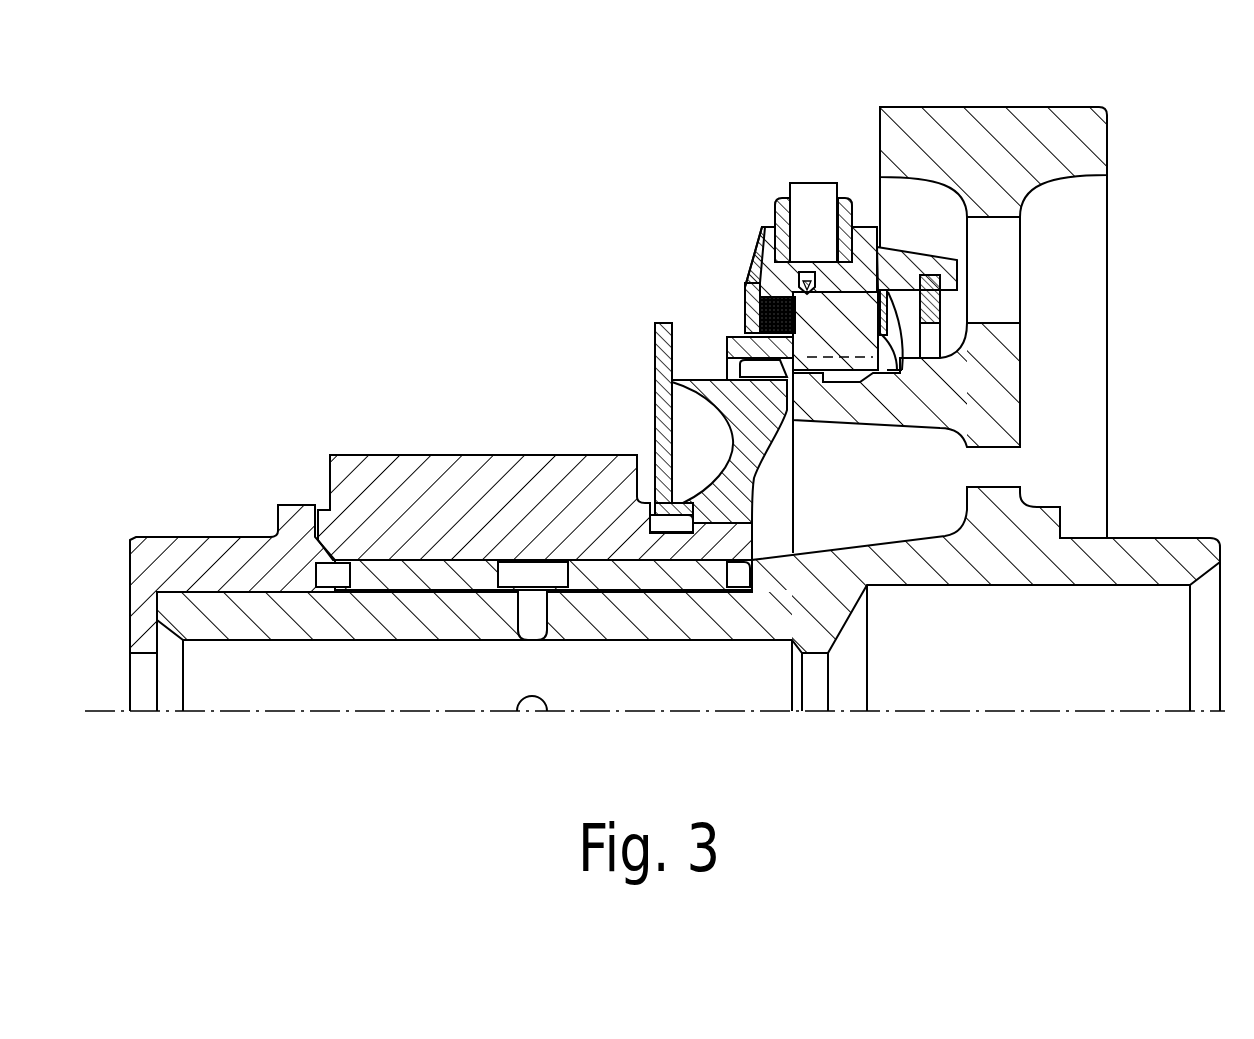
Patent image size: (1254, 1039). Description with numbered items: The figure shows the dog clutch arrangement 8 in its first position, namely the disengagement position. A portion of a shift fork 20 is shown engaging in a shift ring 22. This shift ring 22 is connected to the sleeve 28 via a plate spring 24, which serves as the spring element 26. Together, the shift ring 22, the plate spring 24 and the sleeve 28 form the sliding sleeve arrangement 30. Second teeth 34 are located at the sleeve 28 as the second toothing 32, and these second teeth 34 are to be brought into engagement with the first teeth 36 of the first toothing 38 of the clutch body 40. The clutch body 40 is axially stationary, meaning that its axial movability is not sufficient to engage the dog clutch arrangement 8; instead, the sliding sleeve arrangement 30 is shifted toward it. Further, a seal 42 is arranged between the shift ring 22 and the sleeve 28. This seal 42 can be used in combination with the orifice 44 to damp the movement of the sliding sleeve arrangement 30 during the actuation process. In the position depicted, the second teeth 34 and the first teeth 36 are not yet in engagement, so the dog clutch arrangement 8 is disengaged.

The dog clutch arrangement 8 is at (262, 172).
The shift fork 20 is at (800, 235).
The shift ring 22 is at (755, 275).
The plate spring 24 is at (886, 312).
The spring element 26 is at (897, 272).
The sleeve 28 is at (785, 290).
The sliding sleeve arrangement 30 is at (725, 152).
The second toothing 32 is at (835, 352).
The second teeth 34 is at (772, 337).
The first teeth 36 is at (760, 368).
The first toothing 38 is at (765, 382).
The clutch body 40 is at (750, 430).
The seal 42 is at (775, 318).
The orifice 44 is at (807, 287).